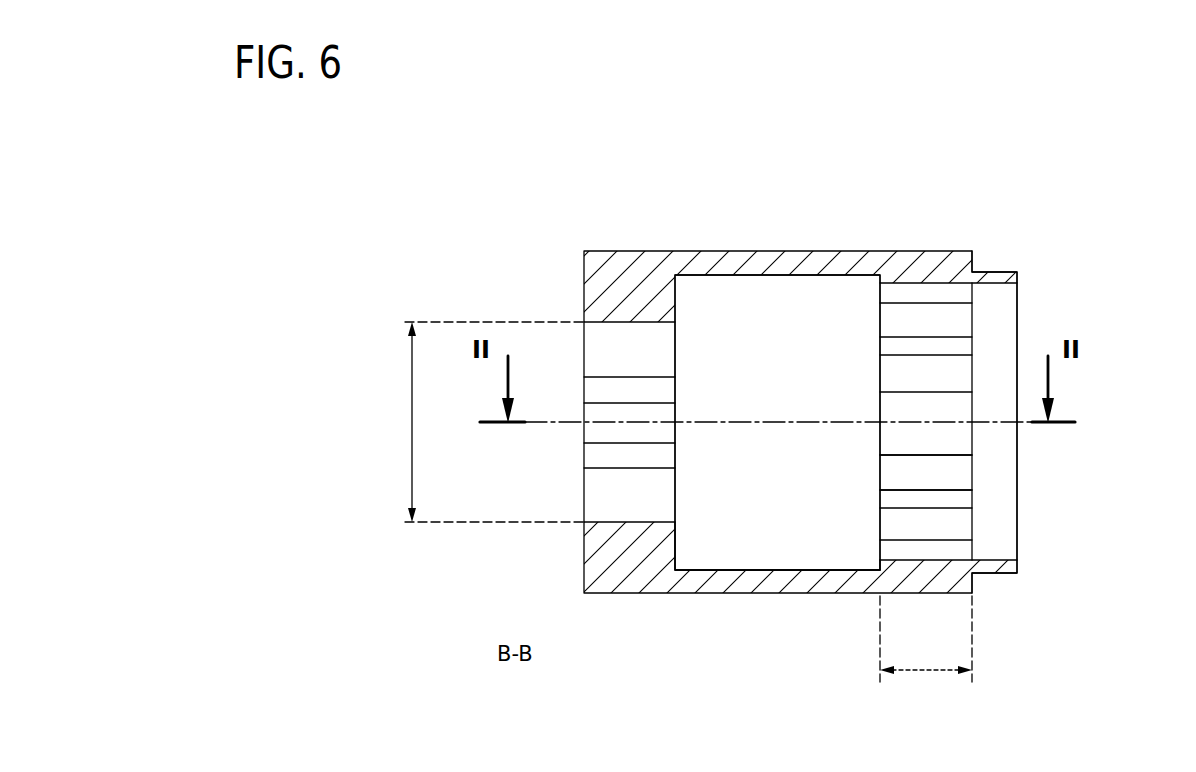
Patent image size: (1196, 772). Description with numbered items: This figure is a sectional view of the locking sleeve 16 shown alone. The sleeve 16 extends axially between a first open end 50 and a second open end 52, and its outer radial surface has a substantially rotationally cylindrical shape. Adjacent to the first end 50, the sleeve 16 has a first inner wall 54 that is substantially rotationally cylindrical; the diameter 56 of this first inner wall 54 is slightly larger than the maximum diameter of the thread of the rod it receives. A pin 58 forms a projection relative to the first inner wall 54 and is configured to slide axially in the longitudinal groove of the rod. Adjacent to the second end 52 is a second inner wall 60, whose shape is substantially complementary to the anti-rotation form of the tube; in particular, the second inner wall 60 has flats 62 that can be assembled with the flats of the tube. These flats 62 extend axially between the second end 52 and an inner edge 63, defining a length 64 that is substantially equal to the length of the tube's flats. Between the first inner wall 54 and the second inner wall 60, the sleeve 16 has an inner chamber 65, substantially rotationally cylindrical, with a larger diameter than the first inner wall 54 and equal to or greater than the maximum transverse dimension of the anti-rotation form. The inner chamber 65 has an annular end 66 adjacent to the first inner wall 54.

The locking sleeve 16 is at (1102, 644).
The first open end 50 is at (552, 268).
The second open end 52 is at (1060, 266).
The first inner wall 54 is at (610, 497).
The diameter of the first inner wall 56 is at (480, 422).
The pin 58 is at (657, 413).
The second inner wall 60 is at (925, 298).
The flats 62 is at (928, 474).
The inner edge 63 is at (878, 523).
The length of the flats 64 is at (926, 651).
The inner chamber 65 is at (787, 298).
The annular end 66 is at (680, 540).